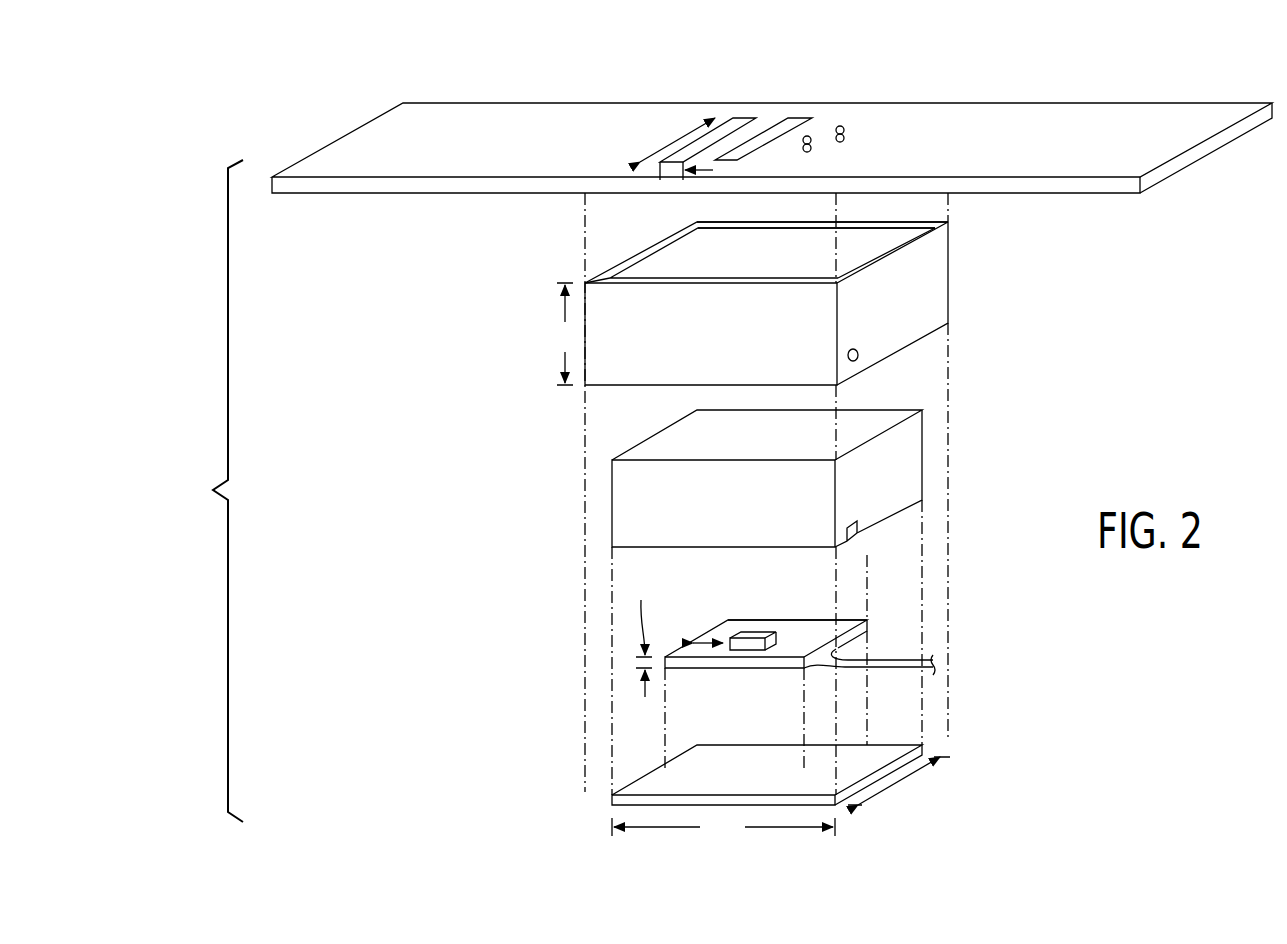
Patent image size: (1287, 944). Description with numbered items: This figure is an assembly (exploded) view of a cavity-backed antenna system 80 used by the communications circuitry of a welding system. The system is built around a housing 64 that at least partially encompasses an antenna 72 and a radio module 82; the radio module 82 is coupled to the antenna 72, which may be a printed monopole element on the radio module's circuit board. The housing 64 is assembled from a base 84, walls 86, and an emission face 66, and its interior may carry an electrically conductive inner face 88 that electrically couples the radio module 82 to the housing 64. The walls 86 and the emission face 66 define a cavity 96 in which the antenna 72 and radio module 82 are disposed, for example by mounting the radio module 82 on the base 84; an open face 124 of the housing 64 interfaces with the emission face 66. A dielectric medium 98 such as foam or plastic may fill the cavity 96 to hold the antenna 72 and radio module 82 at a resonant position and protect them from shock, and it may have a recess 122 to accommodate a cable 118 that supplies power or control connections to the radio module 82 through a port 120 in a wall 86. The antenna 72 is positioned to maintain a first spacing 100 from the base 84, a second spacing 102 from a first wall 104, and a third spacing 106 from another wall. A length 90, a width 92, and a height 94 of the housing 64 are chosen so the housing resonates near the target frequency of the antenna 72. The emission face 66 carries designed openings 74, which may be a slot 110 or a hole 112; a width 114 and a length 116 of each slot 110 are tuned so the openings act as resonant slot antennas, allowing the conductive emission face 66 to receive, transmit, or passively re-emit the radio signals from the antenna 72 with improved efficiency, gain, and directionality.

The housing 64 is at (212, 491).
The cavity-backed antenna system 80 is at (318, 99).
The emission face 66 is at (1122, 110).
The designed openings 74 is at (822, 112).
The length 116 is at (676, 140).
The width 114 is at (658, 170).
The slot 110 is at (775, 142).
The hole 112 is at (844, 134).
The inner face 88 is at (1103, 207).
The walls 86 is at (938, 305).
The first wall 104 is at (638, 253).
The open face 124 is at (598, 276).
The third spacing 106 is at (915, 224).
The cavity 96 is at (855, 250).
The height 94 is at (565, 334).
The port 120 is at (860, 352).
The dielectric medium 98 is at (913, 453).
The recess 122 is at (858, 528).
The radio module 82 is at (843, 623).
The cable 118 is at (913, 656).
The antenna 72 is at (747, 642).
The second spacing 102 is at (708, 643).
The first spacing 100 is at (642, 634).
The base 84 is at (620, 800).
The width 92 is at (723, 828).
The length 90 is at (900, 785).